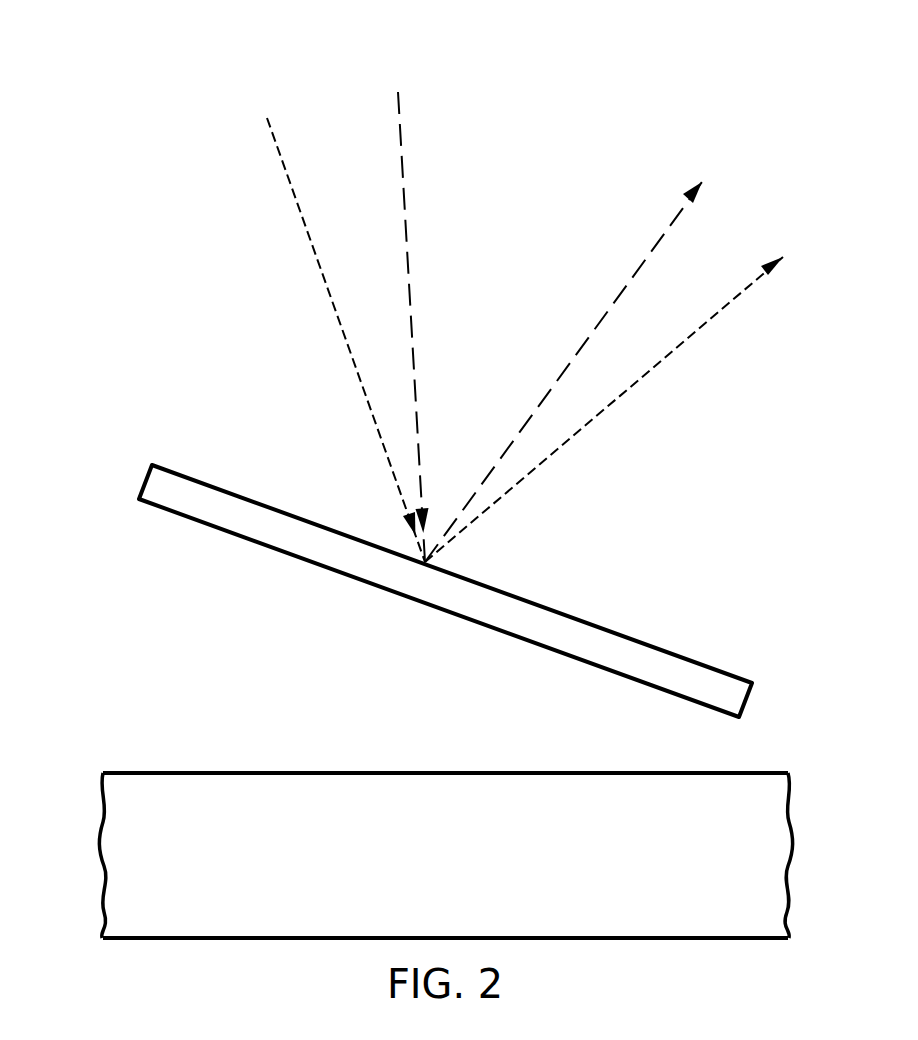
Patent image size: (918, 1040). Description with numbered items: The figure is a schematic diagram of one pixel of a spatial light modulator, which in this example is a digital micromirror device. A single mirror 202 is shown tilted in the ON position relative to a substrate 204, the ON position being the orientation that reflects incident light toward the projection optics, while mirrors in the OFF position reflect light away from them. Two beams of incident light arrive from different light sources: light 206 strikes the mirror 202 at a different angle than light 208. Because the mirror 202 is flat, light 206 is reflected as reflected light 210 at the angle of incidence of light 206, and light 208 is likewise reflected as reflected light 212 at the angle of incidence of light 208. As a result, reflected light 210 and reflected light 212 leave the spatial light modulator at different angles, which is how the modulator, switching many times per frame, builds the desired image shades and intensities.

The mirror 202 is at (143, 490).
The substrate 204 is at (101, 862).
The light 206 is at (408, 272).
The light 208 is at (329, 296).
The reflected light 210 is at (604, 313).
The reflected light 212 is at (616, 401).